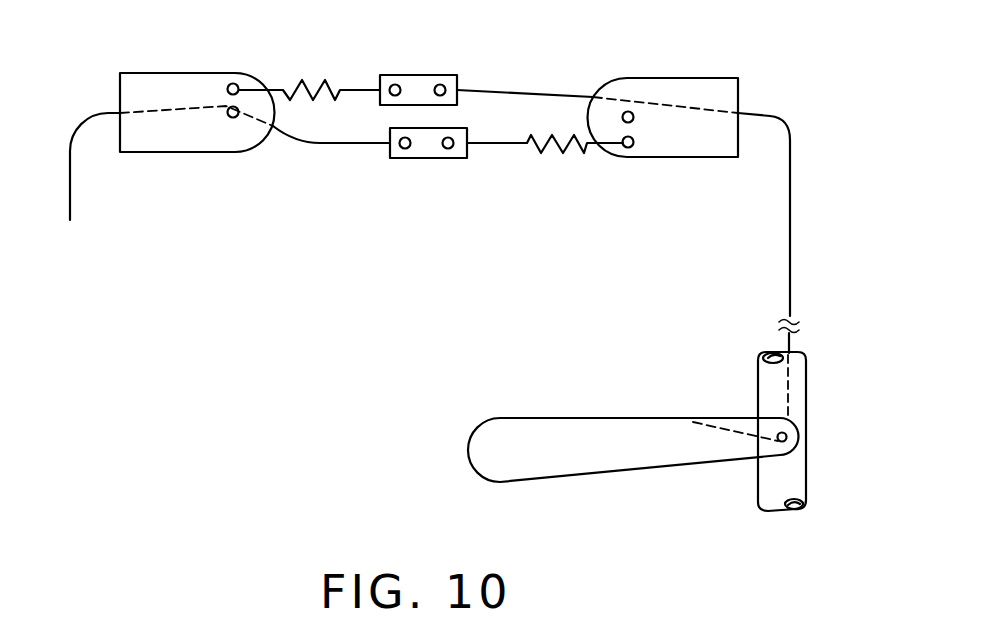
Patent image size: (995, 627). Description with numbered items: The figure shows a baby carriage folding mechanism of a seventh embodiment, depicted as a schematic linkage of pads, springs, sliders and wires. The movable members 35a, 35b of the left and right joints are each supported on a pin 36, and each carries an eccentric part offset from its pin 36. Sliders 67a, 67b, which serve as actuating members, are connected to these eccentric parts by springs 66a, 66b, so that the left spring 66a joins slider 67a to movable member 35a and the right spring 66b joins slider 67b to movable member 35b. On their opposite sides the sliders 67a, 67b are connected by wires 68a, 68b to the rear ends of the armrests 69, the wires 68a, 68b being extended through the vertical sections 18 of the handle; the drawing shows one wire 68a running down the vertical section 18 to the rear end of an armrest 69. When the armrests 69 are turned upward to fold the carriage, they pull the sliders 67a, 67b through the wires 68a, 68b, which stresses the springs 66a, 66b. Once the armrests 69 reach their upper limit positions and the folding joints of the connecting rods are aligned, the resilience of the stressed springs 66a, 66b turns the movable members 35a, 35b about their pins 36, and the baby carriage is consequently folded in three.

The vertical section 18 is at (807, 382).
The movable member 35a is at (170, 143).
The movable member 35b is at (693, 148).
The pin 36 is at (236, 117).
The spring 66a is at (313, 80).
The spring 66b is at (572, 150).
The slider 67a is at (437, 75).
The slider 67b is at (430, 148).
The wire 68a is at (789, 268).
The wire 68b is at (70, 187).
The armrest 69 is at (617, 463).